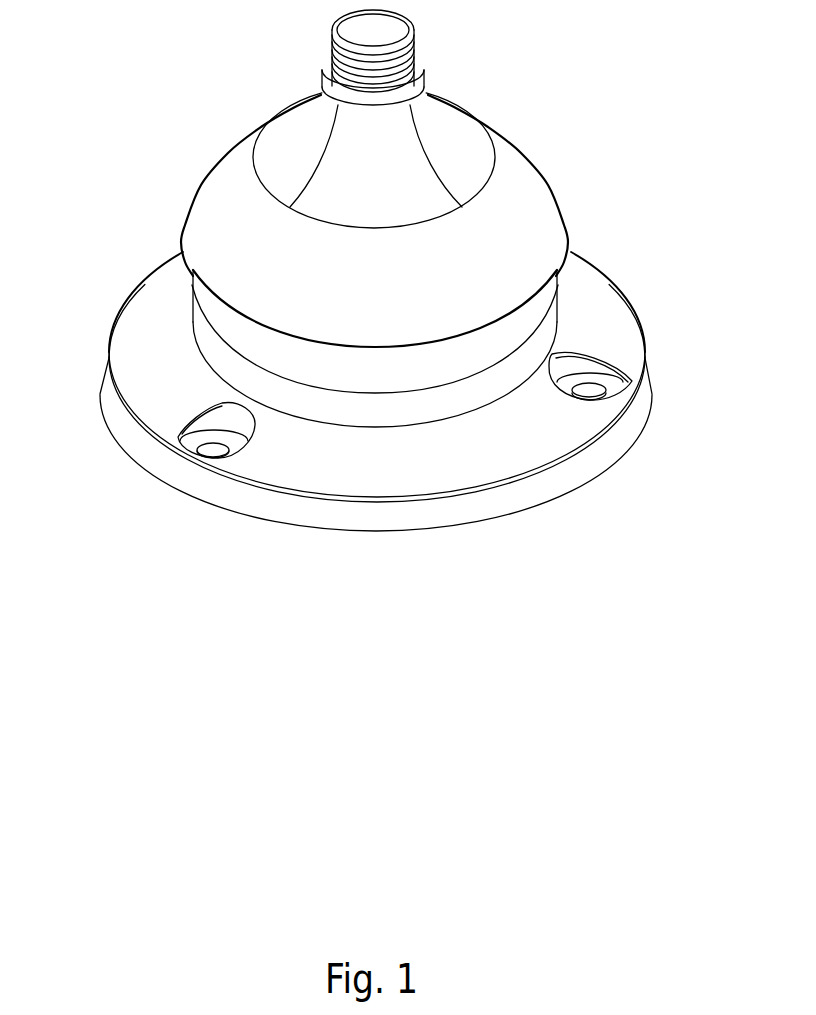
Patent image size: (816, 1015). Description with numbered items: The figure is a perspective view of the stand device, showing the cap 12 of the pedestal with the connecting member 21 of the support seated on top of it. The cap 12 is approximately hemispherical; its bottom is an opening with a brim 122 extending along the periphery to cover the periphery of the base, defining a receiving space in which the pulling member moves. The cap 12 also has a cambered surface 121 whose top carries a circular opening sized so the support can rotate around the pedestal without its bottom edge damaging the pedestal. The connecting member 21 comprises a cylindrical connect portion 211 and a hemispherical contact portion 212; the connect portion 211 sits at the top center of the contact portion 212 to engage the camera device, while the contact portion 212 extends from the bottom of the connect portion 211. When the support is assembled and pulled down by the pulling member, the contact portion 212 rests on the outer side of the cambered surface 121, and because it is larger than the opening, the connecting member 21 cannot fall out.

The cap 12 is at (382, 364).
The cambered surface 121 is at (528, 326).
The brim 122 is at (152, 327).
The connecting member 21 is at (383, 178).
The connect portion 211 is at (410, 50).
The contact portion 212 is at (530, 194).